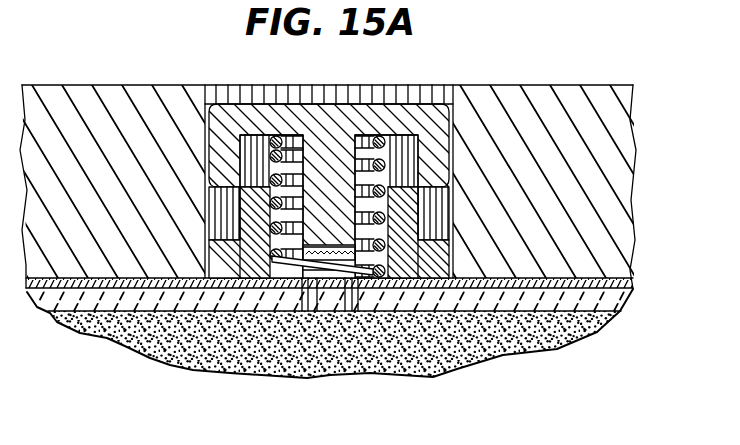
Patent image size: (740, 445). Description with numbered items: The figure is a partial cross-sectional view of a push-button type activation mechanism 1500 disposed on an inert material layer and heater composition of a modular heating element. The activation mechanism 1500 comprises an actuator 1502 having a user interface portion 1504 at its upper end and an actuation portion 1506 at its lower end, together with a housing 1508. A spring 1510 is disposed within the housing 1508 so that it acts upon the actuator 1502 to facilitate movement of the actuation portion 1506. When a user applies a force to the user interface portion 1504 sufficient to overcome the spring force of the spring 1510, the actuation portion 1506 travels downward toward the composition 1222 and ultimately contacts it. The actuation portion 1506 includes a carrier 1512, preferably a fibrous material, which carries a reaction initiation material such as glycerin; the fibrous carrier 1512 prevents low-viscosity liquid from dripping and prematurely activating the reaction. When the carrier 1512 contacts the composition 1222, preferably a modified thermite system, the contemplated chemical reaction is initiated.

The activation mechanism 1500 is at (170, 74).
The actuator 1502 is at (333, 160).
The user interface portion 1504 is at (422, 117).
The actuation portion 1506 is at (328, 227).
The housing 1508 is at (233, 265).
The spring 1510 is at (384, 164).
The carrier 1512 is at (328, 268).
The composition 1222 is at (423, 344).